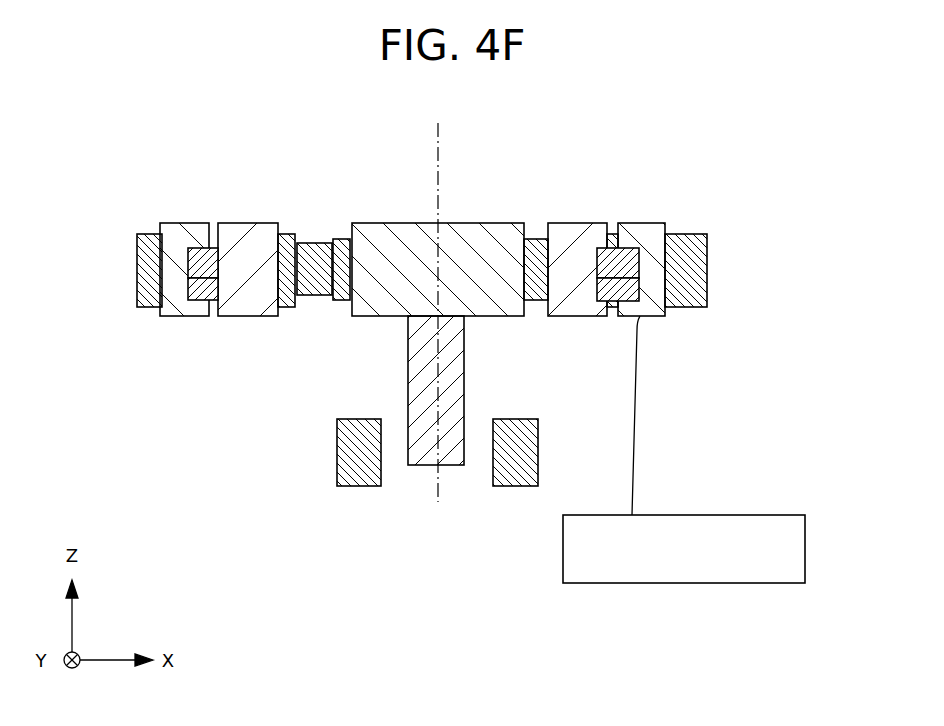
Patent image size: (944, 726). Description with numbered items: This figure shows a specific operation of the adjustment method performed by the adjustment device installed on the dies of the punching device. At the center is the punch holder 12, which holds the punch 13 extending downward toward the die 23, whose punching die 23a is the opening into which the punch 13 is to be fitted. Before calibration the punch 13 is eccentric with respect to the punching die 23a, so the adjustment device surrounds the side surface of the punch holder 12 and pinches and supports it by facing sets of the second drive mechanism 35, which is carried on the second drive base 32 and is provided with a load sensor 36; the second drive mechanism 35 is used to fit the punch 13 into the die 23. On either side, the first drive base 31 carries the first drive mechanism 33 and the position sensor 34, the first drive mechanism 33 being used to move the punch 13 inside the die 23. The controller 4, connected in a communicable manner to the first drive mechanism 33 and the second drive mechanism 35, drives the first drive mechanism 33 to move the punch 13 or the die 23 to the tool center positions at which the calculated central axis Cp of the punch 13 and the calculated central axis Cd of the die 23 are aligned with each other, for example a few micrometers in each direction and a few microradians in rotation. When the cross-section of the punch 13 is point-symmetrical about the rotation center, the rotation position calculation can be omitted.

The punch holder 12 is at (452, 237).
The punch 13 is at (418, 393).
The die 23 is at (353, 446).
The punching die 23a is at (380, 467).
The first drive base 31 is at (191, 306).
The second drive base 32 is at (248, 303).
The first drive mechanism 33 is at (200, 257).
The position sensor 34 is at (193, 290).
The second drive mechanism 35 is at (147, 251).
The load sensor 36 is at (338, 293).
The controller 4 is at (805, 548).
The calculated central axis of die Cd is at (438, 133).
The calculated central axis of punch Cp is at (433, 148).